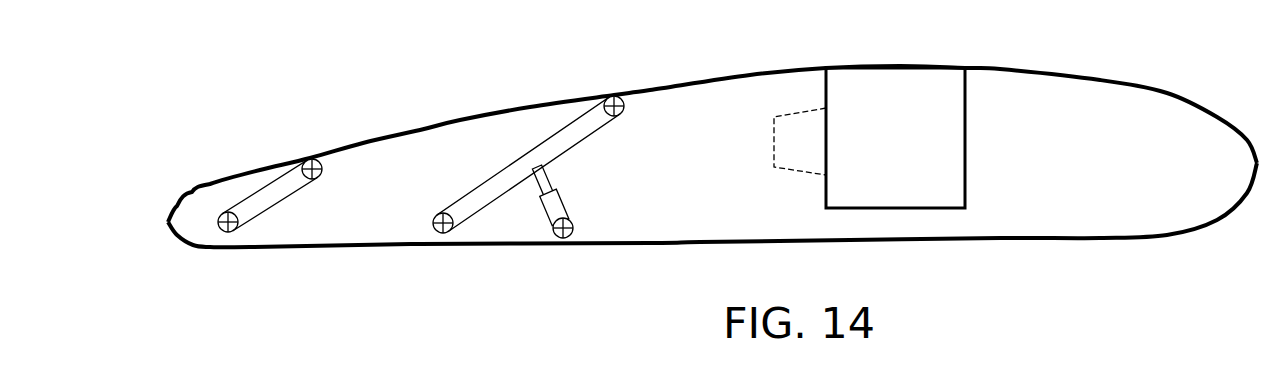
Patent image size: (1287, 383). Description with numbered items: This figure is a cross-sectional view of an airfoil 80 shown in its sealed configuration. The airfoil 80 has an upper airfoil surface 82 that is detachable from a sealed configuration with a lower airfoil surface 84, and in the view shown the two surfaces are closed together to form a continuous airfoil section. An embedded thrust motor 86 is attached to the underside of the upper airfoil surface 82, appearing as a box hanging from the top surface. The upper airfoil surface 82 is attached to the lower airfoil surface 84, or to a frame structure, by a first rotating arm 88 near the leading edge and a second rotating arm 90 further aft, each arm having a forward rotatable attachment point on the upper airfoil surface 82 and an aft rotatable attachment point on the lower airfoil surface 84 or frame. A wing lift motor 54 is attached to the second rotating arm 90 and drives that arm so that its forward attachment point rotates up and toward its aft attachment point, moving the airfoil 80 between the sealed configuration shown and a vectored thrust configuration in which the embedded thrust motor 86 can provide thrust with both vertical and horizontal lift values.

The airfoil 80 is at (695, 172).
The upper airfoil surface 82 is at (1025, 68).
The lower airfoil surface 84 is at (1017, 242).
The embedded thrust motor 86 is at (954, 160).
The first rotating arm 88 is at (272, 217).
The second rotating arm 90 is at (524, 212).
The wing lift motor 54 is at (578, 243).